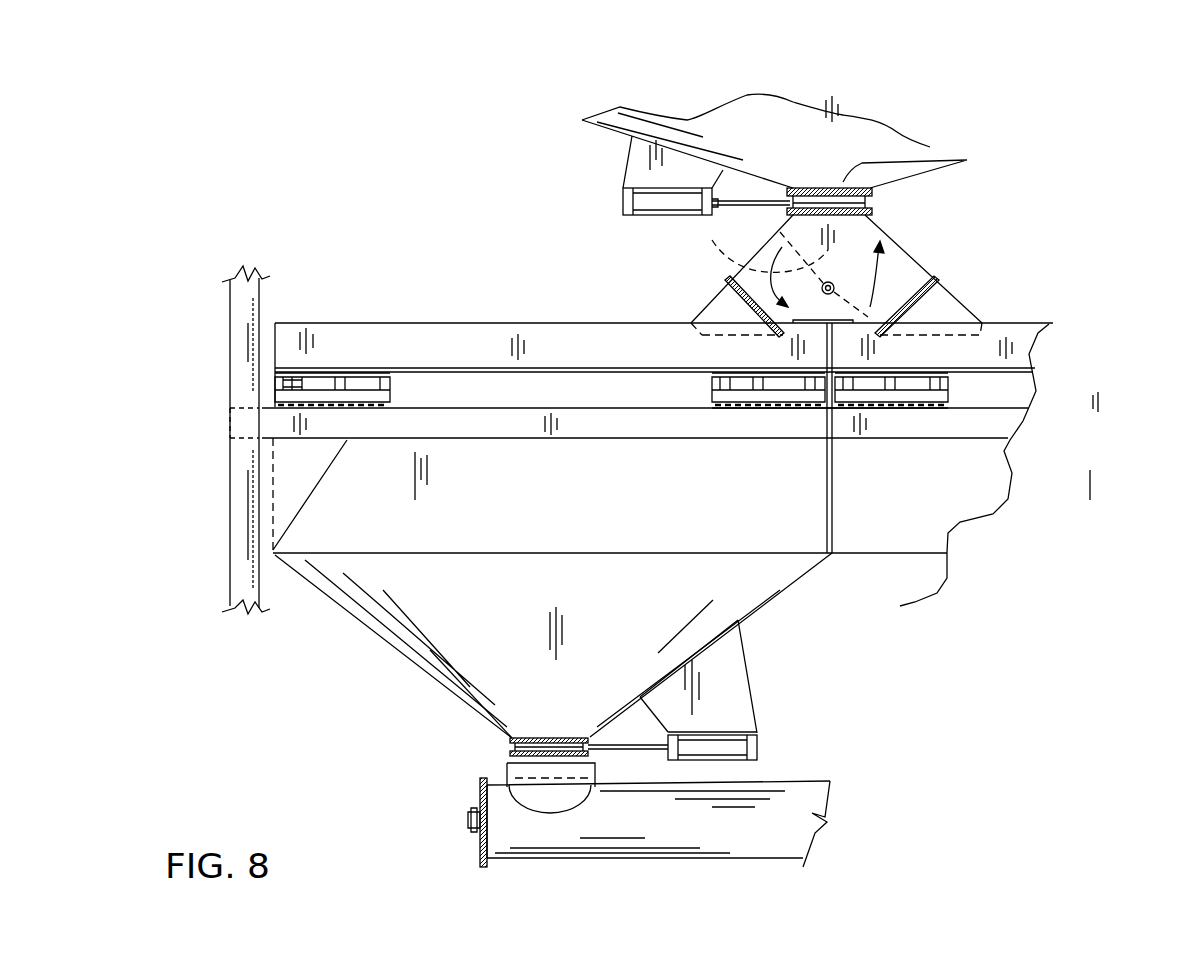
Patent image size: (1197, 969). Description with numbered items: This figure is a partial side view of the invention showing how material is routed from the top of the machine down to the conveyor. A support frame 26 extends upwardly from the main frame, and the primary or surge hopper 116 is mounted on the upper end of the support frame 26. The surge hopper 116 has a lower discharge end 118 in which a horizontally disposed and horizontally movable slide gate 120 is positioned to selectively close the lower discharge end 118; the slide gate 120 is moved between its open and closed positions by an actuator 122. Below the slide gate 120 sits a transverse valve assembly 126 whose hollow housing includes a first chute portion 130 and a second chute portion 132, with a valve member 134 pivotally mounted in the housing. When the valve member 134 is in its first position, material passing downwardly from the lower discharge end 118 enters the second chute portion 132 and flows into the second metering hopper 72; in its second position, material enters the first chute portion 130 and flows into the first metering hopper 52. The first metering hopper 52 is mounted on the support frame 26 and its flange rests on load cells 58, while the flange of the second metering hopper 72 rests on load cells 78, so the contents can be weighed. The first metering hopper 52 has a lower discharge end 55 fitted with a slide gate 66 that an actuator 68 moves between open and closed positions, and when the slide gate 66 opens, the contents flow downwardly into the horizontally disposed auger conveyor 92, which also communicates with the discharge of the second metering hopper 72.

The support frame 26 is at (226, 306).
The first metering hopper 52 is at (445, 652).
The lower discharge end 55 is at (550, 732).
The load cells 58 is at (710, 388).
The slide gate 66 is at (513, 748).
The actuator 68 is at (752, 724).
The second metering hopper 72 is at (930, 526).
The load cells 78 is at (923, 388).
The auger conveyor 92 is at (802, 776).
The surge hopper 116 is at (916, 118).
The lower discharge end 118 is at (930, 147).
The slide gate 120 is at (857, 200).
The actuator 122 is at (655, 207).
The transverse valve assembly 126 is at (963, 265).
The first chute portion 130 is at (703, 308).
The second chute portion 132 is at (937, 313).
The valve member 134 is at (779, 269).